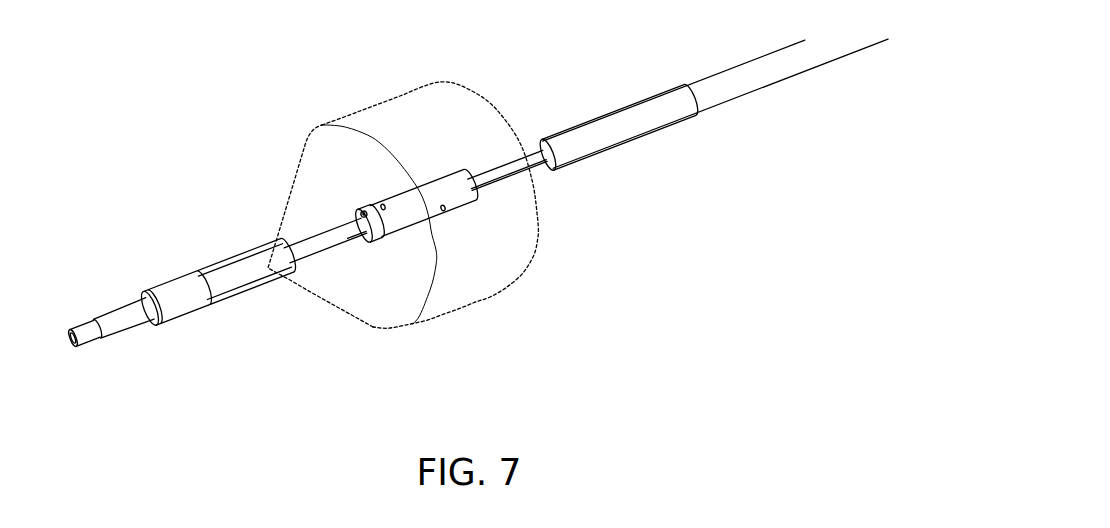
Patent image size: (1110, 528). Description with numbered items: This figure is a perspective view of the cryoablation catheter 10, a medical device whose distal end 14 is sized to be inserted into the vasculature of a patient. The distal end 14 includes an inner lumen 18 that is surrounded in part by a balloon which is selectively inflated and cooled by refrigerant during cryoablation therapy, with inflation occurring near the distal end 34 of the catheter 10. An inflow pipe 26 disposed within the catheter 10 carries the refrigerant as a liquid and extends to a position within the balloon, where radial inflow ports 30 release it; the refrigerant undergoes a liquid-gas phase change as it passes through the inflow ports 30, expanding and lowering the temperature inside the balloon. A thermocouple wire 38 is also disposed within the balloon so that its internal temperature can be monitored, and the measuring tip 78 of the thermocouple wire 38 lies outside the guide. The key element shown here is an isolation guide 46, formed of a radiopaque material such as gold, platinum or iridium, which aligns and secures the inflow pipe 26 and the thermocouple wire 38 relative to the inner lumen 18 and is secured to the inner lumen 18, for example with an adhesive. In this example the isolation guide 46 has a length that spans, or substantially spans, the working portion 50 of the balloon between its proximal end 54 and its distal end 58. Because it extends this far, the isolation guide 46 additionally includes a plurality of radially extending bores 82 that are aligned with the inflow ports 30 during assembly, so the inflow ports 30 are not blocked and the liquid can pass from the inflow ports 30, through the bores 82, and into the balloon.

The cryoablation catheter 10 is at (461, 216).
The distal end 14 is at (74, 367).
The inner lumen 18 is at (543, 162).
The inflow pipe 26 is at (500, 165).
The inflow ports 30 is at (422, 160).
The distal end 34 is at (93, 281).
The thermocouple wire 38 is at (490, 183).
The isolation guide 46 is at (392, 218).
The working portion 50 is at (380, 168).
The proximal end 54 is at (466, 62).
The distal end 58 is at (278, 168).
The measuring tip 78 is at (351, 264).
The radially extending bores 82 is at (383, 207).